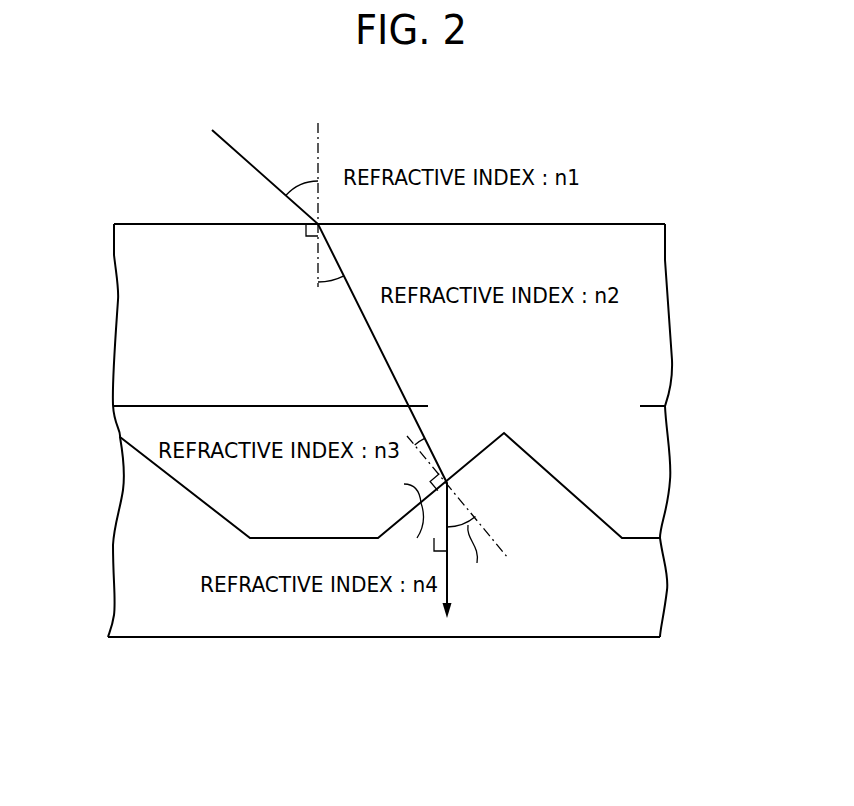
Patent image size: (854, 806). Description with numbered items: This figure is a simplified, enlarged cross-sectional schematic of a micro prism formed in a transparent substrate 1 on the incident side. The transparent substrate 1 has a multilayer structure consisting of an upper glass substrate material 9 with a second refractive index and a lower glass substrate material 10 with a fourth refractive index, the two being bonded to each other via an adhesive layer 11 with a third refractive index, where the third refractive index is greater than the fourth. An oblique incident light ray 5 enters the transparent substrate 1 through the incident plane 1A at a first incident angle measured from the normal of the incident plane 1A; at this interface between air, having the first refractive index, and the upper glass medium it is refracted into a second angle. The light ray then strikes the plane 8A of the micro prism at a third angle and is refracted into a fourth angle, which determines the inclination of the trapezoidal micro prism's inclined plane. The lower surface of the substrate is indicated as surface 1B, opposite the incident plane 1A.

The transparent substrate 1 is at (394, 426).
The incident plane 1A is at (593, 224).
The bottom surface 1B is at (384, 670).
The incident light ray 5 is at (228, 140).
The plane of the micro prism 8A is at (146, 488).
The upper glass substrate material 9 is at (363, 233).
The lower glass substrate material 10 is at (355, 627).
The adhesive layer 11 is at (146, 421).